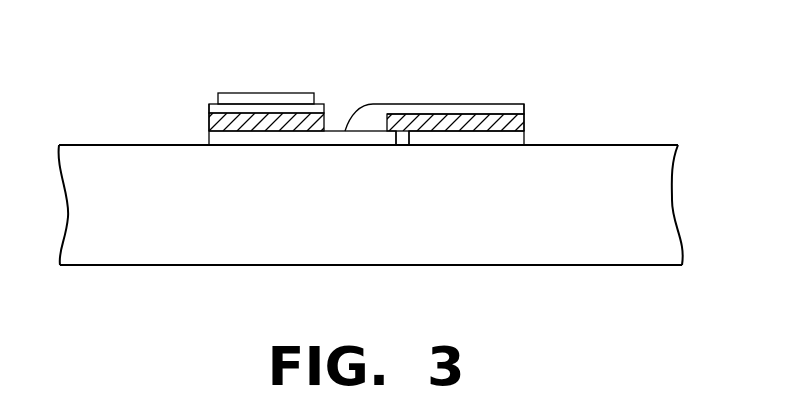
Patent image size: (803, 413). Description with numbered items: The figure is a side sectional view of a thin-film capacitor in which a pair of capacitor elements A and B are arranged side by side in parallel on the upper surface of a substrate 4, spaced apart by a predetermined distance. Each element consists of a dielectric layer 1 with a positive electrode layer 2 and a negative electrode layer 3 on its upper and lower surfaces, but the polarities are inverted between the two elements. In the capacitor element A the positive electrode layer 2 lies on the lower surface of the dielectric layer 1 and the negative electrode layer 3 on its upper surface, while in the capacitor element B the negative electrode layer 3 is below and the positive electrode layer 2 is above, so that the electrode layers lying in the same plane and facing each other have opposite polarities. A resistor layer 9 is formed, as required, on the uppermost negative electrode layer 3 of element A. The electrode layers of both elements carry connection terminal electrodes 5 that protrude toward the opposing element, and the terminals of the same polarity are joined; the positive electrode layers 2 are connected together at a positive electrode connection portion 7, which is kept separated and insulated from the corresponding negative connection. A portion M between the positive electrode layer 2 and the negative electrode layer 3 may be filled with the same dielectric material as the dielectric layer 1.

The dielectric layer 1 is at (215, 123).
The positive electrode layer 2 is at (238, 138).
The negative electrode layer 3 is at (251, 110).
The substrate 4 is at (647, 197).
The connection terminal electrode 5 is at (368, 115).
The positive electrode connection portion 7 is at (324, 144).
The resistor layer 9 is at (277, 95).
The capacitor element A is at (210, 95).
The capacitor element B is at (477, 102).
The filled portion M is at (403, 145).